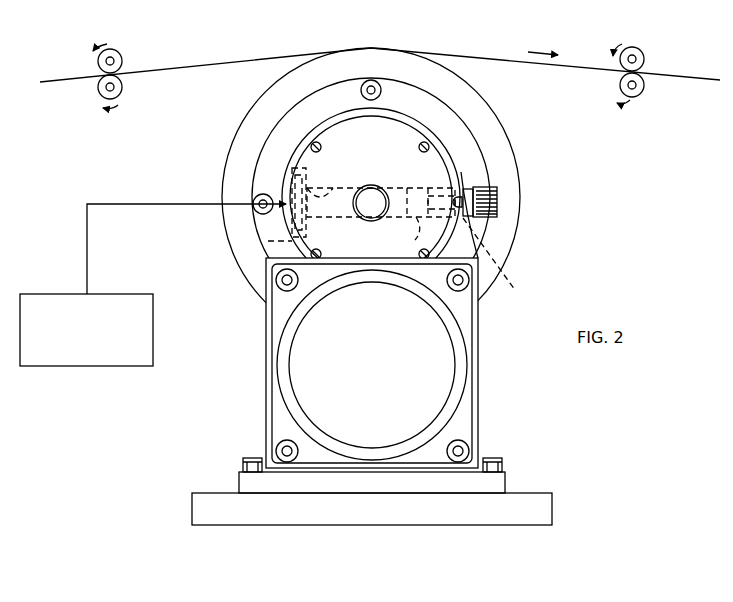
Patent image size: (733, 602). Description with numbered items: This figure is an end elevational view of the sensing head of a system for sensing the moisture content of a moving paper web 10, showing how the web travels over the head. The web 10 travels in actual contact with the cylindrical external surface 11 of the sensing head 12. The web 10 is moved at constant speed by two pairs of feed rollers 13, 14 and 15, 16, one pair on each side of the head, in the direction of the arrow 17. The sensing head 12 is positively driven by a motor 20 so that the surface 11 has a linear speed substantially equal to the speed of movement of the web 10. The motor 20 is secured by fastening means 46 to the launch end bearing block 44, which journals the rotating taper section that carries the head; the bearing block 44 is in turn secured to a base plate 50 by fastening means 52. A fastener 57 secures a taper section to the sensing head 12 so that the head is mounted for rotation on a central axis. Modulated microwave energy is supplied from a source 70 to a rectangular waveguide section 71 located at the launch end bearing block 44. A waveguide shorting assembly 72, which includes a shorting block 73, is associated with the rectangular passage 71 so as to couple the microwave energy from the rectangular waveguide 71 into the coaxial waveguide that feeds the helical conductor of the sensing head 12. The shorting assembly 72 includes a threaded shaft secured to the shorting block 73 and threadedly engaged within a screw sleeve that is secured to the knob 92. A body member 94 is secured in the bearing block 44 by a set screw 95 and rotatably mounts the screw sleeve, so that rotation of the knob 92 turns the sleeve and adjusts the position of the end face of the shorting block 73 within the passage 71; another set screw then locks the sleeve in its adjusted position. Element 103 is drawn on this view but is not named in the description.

The paper web 10 is at (235, 58).
The cylindrical external surface 11 is at (507, 132).
The sensing head 12 is at (535, 187).
The feed roller 13 is at (119, 56).
The feed roller 14 is at (122, 86).
The feed roller 15 is at (645, 57).
The feed roller 16 is at (645, 90).
The arrow 17 is at (541, 51).
The motor 20 is at (463, 413).
The launch end bearing block 44 is at (457, 167).
The fastening means 46 is at (280, 283).
The base plate 50 is at (282, 510).
The fastening means 52 is at (243, 460).
The fastener 57 is at (372, 80).
The source 70 is at (155, 330).
The rectangular waveguide section 71 is at (335, 189).
The waveguide shorting assembly 72 is at (500, 202).
The shorting block 73 is at (415, 234).
The knob 92 is at (478, 220).
The body member 94 is at (498, 263).
The set screw 95 is at (463, 188).
The cover plate 103 is at (405, 138).